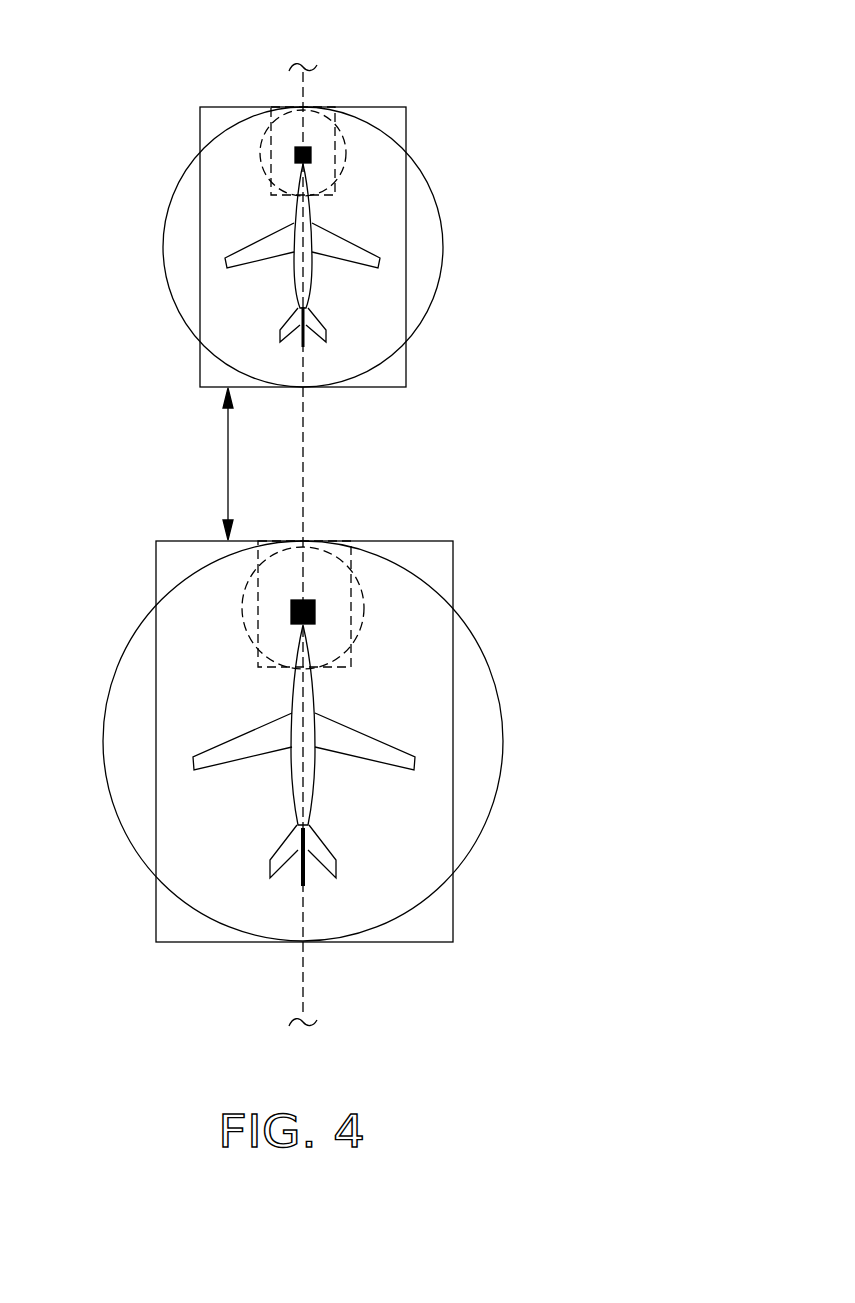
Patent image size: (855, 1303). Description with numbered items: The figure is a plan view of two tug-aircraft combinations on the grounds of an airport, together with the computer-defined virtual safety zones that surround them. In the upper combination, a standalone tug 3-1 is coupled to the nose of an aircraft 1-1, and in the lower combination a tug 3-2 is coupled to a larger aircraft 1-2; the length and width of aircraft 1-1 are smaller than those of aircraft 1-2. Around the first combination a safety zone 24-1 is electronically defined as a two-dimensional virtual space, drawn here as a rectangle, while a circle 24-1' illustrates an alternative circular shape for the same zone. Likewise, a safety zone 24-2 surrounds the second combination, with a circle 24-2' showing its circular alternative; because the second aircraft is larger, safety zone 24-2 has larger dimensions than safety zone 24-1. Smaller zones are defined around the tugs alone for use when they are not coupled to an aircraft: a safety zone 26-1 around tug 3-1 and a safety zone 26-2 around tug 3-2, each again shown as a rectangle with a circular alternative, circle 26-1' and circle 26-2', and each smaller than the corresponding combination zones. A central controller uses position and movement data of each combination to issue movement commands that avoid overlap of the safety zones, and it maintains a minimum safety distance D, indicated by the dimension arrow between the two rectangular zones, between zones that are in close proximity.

The safety zone 24-1 is at (328, 205).
The circle 24-1' is at (358, 247).
The safety zone 26-1 is at (203, 131).
The circle 26-1' is at (200, 153).
The standalone tug 3-1 is at (311, 155).
The aircraft 1-1 is at (350, 253).
The minimum safety distance D is at (228, 465).
The safety zone 24-2 is at (328, 709).
The circle 24-2' is at (356, 741).
The safety zone 26-2 is at (179, 604).
The circle 26-2' is at (198, 608).
The standalone tug 3-2 is at (317, 612).
The aircraft 1-2 is at (370, 752).